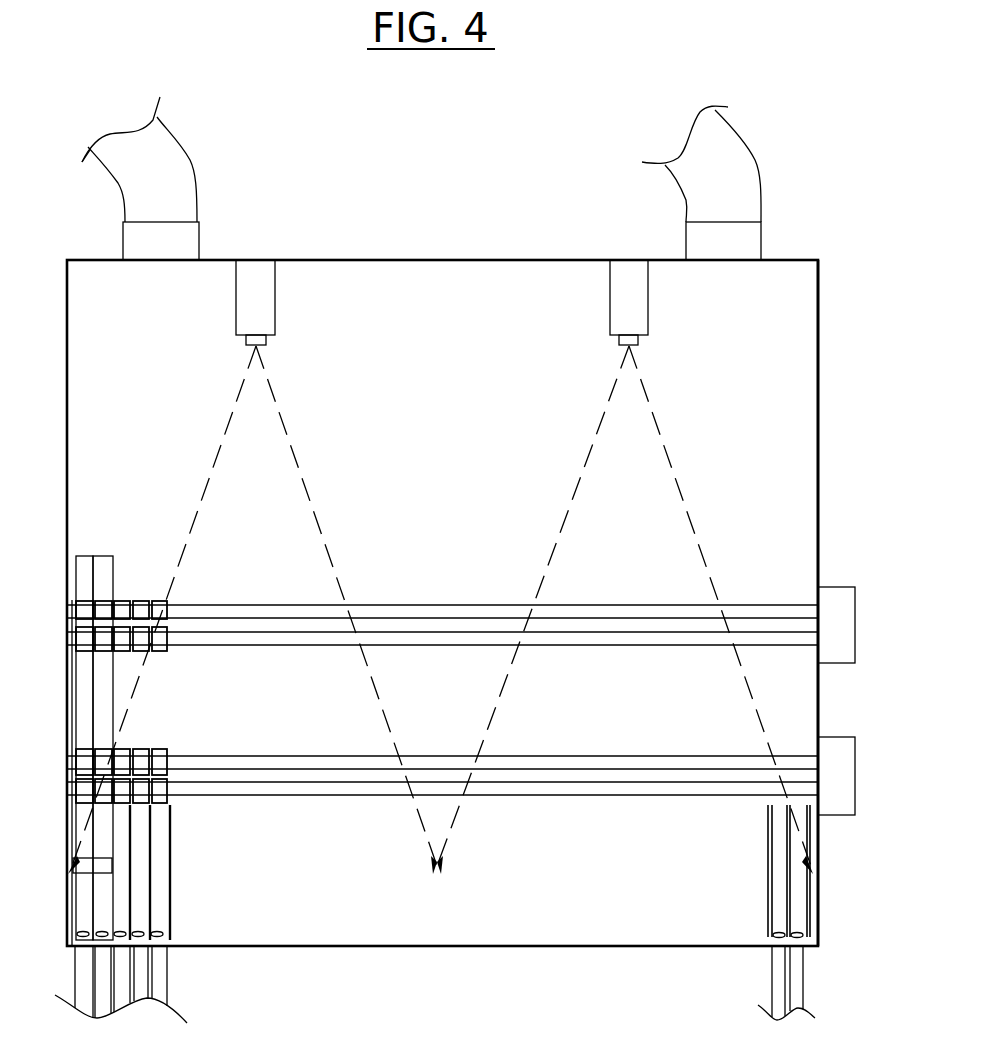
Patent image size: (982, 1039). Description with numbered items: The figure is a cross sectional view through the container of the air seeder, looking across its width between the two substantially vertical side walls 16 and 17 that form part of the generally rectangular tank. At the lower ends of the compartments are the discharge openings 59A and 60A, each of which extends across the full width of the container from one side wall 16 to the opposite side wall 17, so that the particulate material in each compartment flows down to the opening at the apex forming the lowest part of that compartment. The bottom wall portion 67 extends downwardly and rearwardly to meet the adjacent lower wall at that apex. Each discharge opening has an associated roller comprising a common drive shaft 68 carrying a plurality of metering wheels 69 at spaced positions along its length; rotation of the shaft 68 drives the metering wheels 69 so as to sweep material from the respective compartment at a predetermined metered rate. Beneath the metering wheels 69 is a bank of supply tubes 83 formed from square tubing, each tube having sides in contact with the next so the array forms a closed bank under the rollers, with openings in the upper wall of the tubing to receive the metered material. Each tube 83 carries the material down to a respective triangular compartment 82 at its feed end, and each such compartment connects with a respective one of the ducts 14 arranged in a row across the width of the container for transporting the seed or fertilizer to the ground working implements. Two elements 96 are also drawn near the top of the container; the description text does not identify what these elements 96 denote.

The first duct 14 is at (167, 977).
The side wall 16 is at (67, 360).
The side wall 17 is at (818, 540).
The discharge opening 59A is at (228, 645).
The discharge opening 60A is at (233, 797).
The bottom wall portion 67 is at (449, 502).
The drive shaft 68 is at (495, 615).
The metering wheels 69 is at (141, 600).
The triangular compartment 82 is at (170, 913).
The supply tube 83 is at (113, 697).
The spray nozzles 96 is at (259, 302).